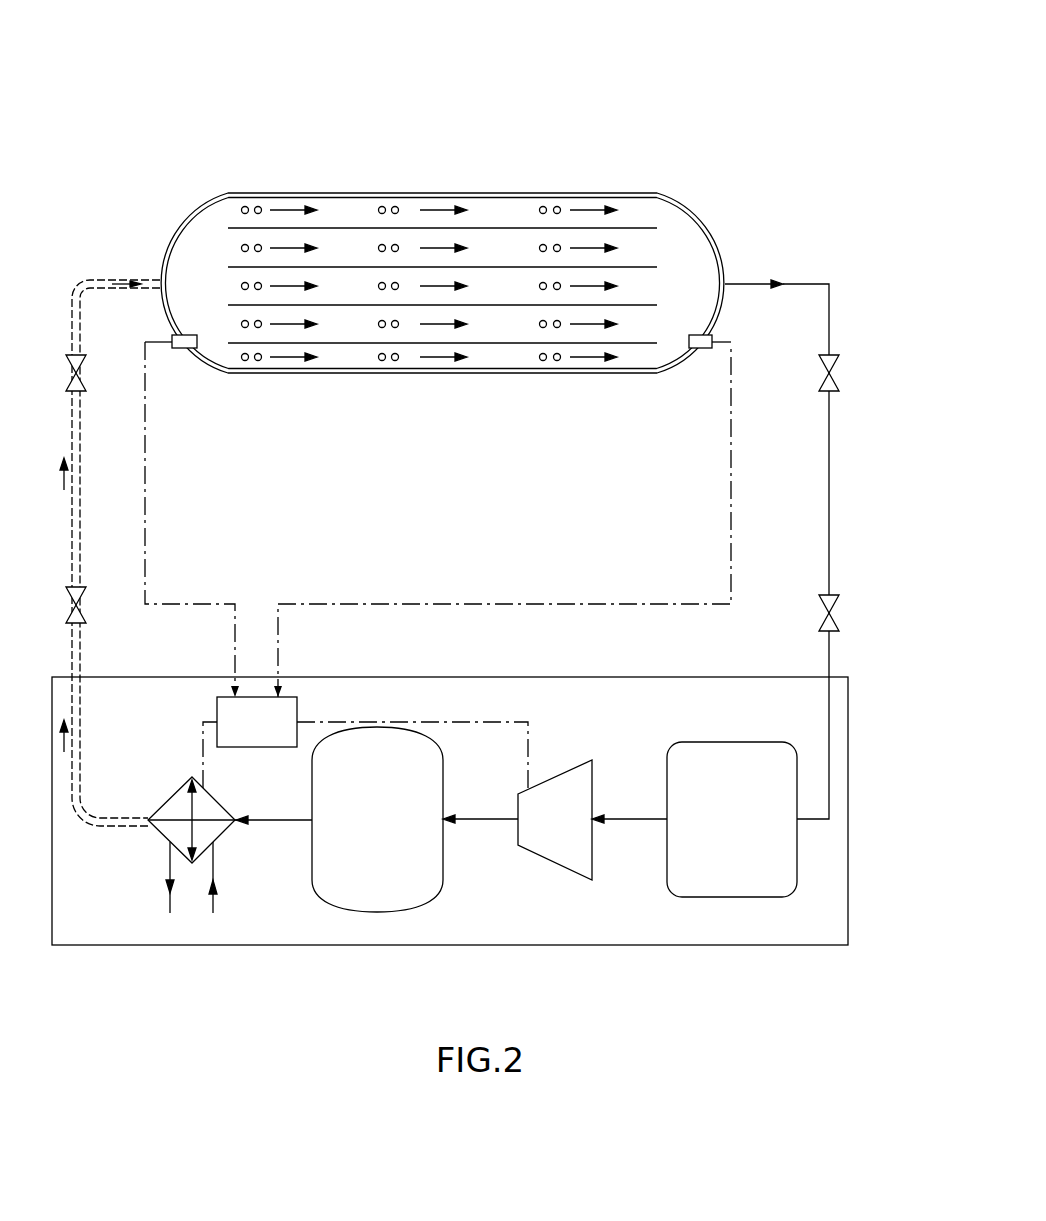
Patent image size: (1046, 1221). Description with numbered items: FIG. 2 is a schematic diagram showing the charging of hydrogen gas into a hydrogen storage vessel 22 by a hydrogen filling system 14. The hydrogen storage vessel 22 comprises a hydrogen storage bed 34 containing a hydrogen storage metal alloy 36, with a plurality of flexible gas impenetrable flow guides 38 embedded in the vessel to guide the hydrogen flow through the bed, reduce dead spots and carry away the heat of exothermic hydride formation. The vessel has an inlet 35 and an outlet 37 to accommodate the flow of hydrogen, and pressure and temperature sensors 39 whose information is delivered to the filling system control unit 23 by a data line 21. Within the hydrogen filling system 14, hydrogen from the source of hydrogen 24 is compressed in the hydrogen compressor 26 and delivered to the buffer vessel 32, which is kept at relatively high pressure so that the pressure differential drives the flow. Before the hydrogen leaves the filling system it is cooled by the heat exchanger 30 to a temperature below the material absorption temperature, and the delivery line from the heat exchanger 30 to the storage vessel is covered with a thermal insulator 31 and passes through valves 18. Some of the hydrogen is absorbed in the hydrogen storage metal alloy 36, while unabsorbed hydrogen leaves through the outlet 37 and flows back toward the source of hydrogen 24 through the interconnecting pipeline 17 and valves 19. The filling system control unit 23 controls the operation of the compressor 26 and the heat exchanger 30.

The hydrogen filling system 14 is at (716, 68).
The hydrogen storage vessel 22 is at (367, 193).
The flexible gas impenetrable flow guides 38 is at (490, 228).
The hydrogen storage metal alloy 36 is at (546, 361).
The hydrogen storage bed 34 is at (695, 235).
The outlet 37 is at (737, 281).
The interconnecting pipeline 17 is at (790, 290).
The valves 19 is at (820, 375).
The pressure and temperature sensors 39 is at (177, 349).
The data line 21 is at (145, 500).
The filling system control unit 23 is at (257, 722).
The heat exchanger 30 is at (176, 790).
The thermal insulator 31 is at (72, 292).
The inlet 35 is at (160, 283).
The valves 18 is at (86, 378).
The buffer vessel 32 is at (415, 819).
The hydrogen compressor 26 is at (592, 820).
The source of hydrogen 24 is at (732, 819).